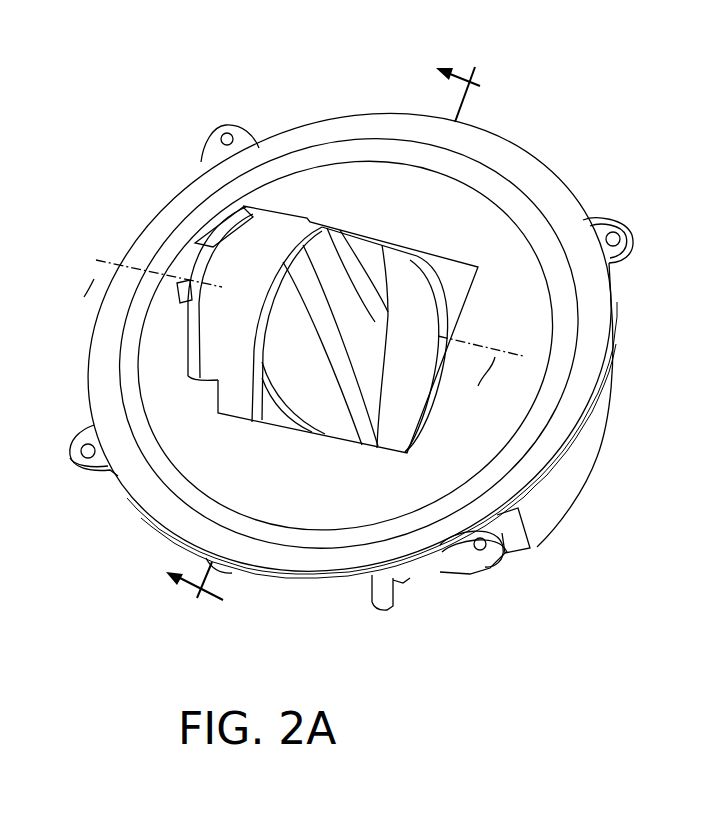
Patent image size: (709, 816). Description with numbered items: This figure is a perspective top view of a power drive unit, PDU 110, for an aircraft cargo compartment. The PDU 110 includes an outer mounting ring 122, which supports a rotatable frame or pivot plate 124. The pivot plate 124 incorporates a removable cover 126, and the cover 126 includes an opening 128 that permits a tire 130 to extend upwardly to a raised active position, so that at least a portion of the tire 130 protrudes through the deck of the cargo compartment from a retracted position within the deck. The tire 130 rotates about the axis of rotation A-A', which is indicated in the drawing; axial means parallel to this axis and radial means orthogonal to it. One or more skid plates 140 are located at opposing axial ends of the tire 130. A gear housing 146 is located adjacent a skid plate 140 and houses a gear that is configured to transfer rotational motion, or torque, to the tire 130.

The power drive unit 110 is at (168, 117).
The mounting ring 122 is at (547, 187).
The pivot plate 124 is at (492, 185).
The removable cover 126 is at (349, 493).
The opening 128 is at (462, 260).
The tire 130 is at (320, 254).
The skid plate 140 is at (247, 279).
The gear housing 146 is at (232, 262).